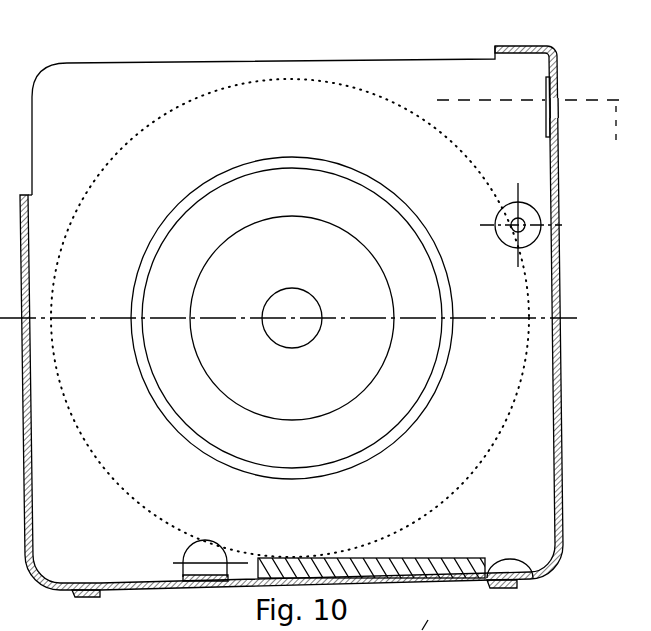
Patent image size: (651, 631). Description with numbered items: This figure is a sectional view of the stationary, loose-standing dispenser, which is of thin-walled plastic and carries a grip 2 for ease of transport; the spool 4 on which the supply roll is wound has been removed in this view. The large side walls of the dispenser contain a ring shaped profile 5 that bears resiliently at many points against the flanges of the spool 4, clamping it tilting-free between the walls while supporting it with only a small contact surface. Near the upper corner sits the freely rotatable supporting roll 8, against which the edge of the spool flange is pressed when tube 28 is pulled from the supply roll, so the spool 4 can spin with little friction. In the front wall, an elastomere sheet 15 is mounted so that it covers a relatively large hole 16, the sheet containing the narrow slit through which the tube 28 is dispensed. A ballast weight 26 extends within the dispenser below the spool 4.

The grip 2 is at (523, 46).
The spool 4 is at (430, 516).
The ring shaped profile 5 is at (358, 462).
The supporting roll 8 is at (522, 221).
The elastomere sheet 15 is at (545, 88).
The hole 16 is at (565, 98).
The ballast weight 26 is at (532, 573).
The tube 28 is at (544, 136).